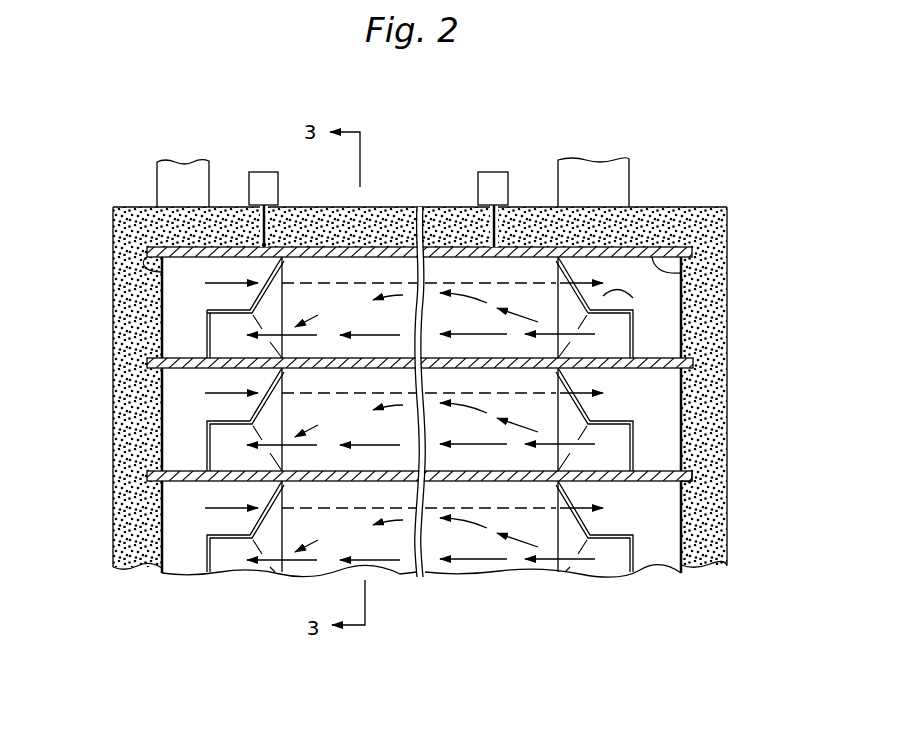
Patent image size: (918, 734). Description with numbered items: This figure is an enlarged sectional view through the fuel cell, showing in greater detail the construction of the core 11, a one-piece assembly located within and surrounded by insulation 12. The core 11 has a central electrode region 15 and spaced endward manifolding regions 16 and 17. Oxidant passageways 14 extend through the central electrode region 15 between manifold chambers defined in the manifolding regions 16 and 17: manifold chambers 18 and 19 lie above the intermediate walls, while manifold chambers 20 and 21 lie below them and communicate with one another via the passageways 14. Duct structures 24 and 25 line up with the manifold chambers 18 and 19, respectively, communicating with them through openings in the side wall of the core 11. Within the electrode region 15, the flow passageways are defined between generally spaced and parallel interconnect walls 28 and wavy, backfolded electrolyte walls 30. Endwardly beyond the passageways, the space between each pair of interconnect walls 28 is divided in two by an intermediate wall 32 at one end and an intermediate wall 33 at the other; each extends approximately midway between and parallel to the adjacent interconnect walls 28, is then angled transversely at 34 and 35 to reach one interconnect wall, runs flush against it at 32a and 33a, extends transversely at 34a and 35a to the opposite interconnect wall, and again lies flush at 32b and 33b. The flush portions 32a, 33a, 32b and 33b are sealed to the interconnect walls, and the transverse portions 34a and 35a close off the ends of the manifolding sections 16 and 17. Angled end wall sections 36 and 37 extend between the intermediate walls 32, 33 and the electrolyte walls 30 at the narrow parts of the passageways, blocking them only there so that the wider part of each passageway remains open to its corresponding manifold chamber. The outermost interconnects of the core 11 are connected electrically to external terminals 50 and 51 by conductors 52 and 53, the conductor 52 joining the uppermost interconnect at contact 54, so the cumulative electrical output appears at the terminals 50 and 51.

The core 11 is at (419, 406).
The insulation 12 is at (392, 207).
The oxidant passageways 14 is at (484, 260).
The central electrode region 15 is at (420, 596).
The manifolding region 16 is at (218, 577).
The manifolding region 17 is at (650, 570).
The manifold chamber 18 is at (191, 267).
The manifold chamber 19 is at (621, 254).
The manifold chamber 20 is at (162, 436).
The manifold chamber 21 is at (665, 436).
The duct structure 24 is at (157, 175).
The duct structure 25 is at (558, 175).
The interconnect walls 28 is at (417, 349).
The electrolyte walls 30 is at (368, 258).
The intermediate wall 32 is at (162, 307).
The intermediate wall flush portion 32a is at (200, 355).
The intermediate wall flush portion 32b is at (128, 272).
The intermediate wall 33 is at (607, 298).
The intermediate wall flush portion 33a is at (683, 272).
The intermediate wall flush portion 33b is at (693, 476).
The angled portion 34 is at (224, 444).
The transverse portion 34a is at (162, 402).
The angled portion 35 is at (636, 285).
The transverse portion 35a is at (727, 308).
The angled end wall section 36 is at (232, 382).
The angled end wall section 37 is at (588, 520).
The external terminal 50 is at (250, 172).
The external terminal 51 is at (478, 172).
The conductor 52 is at (268, 239).
The conductor 53 is at (498, 240).
The contact 54 is at (261, 244).